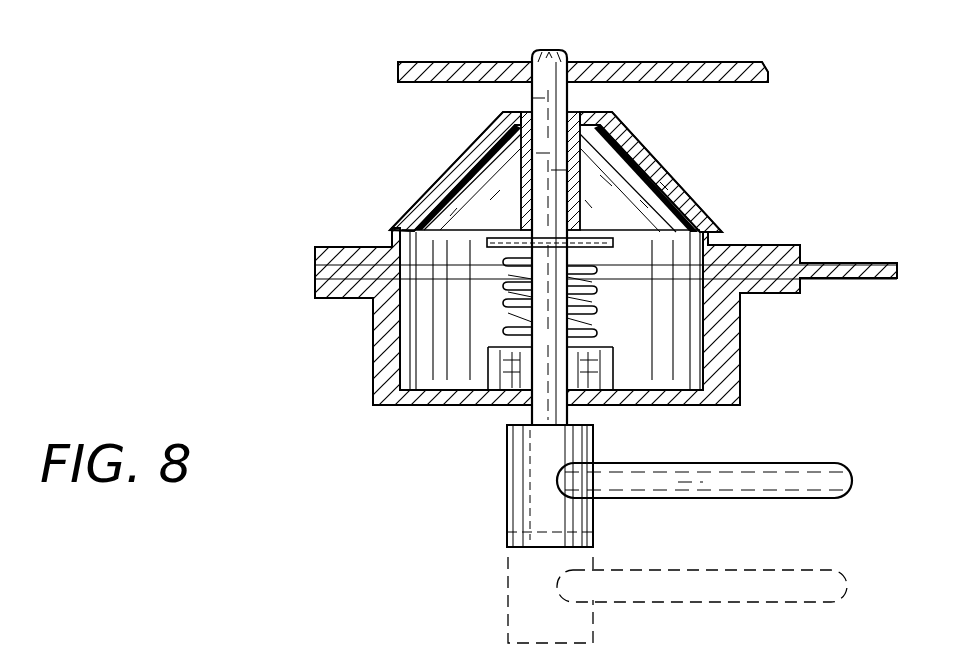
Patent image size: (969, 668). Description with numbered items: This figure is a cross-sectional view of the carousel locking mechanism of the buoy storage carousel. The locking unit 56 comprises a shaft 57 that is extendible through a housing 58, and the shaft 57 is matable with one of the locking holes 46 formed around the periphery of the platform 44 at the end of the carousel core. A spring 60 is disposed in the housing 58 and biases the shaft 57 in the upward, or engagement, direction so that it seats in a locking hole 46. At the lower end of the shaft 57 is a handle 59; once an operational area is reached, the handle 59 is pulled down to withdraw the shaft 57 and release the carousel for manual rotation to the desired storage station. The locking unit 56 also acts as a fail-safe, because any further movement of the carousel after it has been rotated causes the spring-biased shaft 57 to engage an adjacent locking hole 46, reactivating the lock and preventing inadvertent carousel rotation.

The platform 44 is at (743, 60).
The locking holes 46 is at (572, 62).
The locking unit 56 is at (717, 178).
The shaft 57 is at (530, 90).
The housing 58 is at (423, 192).
The handle 59 is at (833, 497).
The spring 60 is at (570, 289).